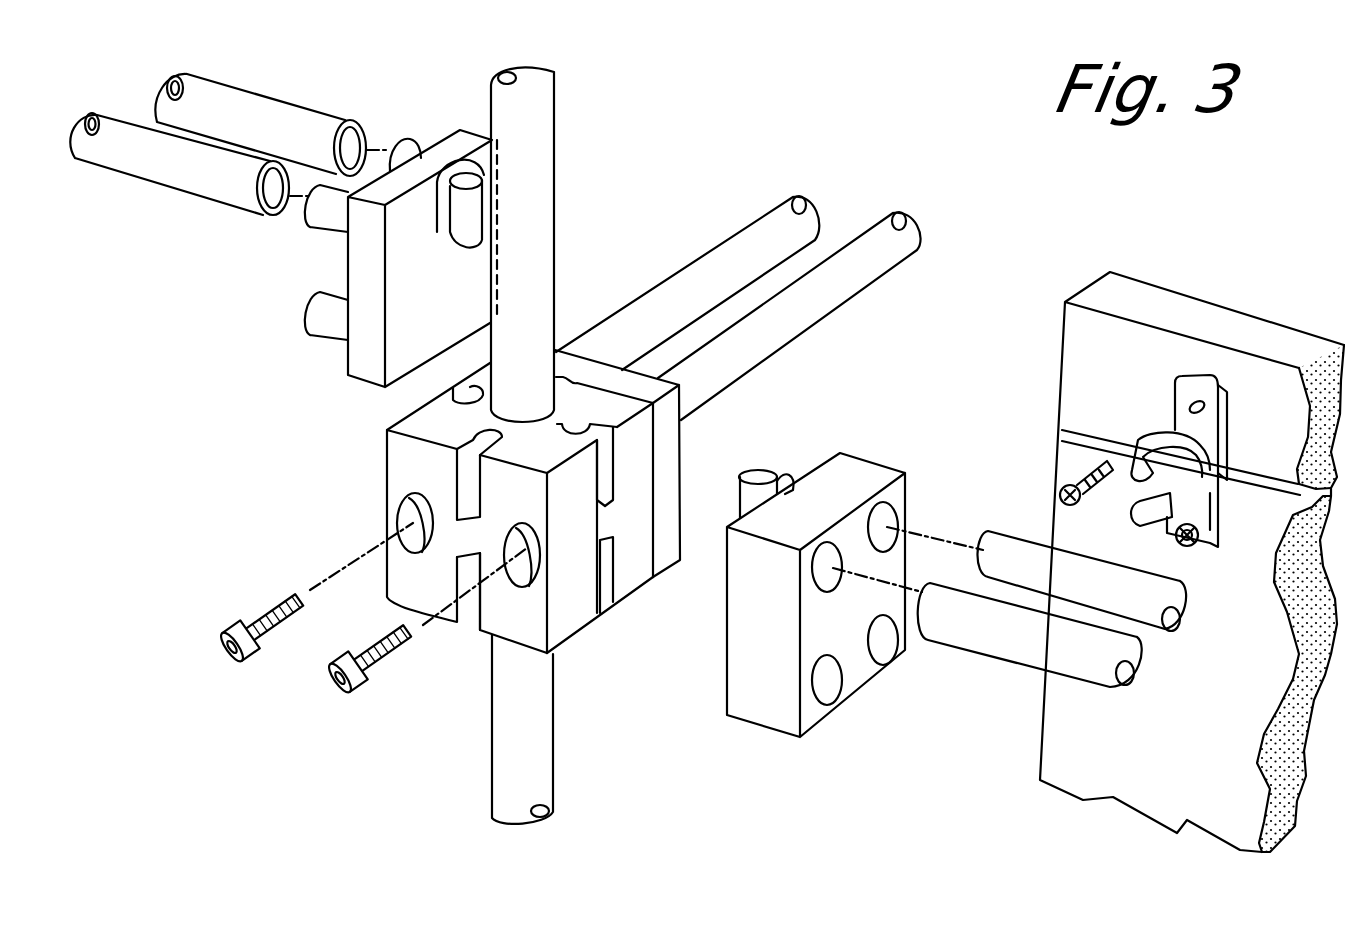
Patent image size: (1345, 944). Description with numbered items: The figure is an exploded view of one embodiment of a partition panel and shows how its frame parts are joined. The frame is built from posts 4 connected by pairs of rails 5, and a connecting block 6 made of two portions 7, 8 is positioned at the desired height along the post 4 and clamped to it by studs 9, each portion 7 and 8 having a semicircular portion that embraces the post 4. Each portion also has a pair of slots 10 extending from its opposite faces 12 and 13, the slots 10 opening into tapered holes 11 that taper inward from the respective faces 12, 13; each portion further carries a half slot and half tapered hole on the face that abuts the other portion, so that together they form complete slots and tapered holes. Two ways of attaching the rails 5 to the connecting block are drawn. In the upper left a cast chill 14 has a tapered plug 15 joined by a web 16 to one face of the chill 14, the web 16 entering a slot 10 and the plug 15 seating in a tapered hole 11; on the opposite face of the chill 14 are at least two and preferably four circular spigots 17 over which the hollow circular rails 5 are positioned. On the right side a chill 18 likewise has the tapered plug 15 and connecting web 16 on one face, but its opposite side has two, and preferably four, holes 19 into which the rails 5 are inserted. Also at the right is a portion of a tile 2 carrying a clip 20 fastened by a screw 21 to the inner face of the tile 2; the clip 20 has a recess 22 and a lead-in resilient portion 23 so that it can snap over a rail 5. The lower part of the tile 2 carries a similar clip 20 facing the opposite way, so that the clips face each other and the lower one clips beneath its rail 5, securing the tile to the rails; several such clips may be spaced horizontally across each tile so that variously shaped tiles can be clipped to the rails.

The tile 2 is at (1175, 312).
The post 4 is at (527, 743).
The rail 5 is at (257, 107).
The connecting block 6 is at (519, 539).
The portion of connecting block 7 is at (455, 546).
The portion of connecting block 8 is at (633, 463).
The stud 9 is at (330, 675).
The slot 10 is at (473, 487).
The tapered hole 11 is at (470, 427).
The face of portion 12 is at (437, 410).
The face of portion 13 is at (403, 603).
The cast chill 14 is at (415, 177).
The tapered plug 15 is at (470, 217).
The web 16 is at (437, 197).
The circular spigot 17 is at (330, 302).
The chill 18 is at (822, 630).
The hole 19 is at (883, 637).
The clip 20 is at (1198, 508).
The screw 21 is at (1193, 548).
The recess 22 is at (1160, 440).
The lead-in resilient portion 23 is at (1130, 462).